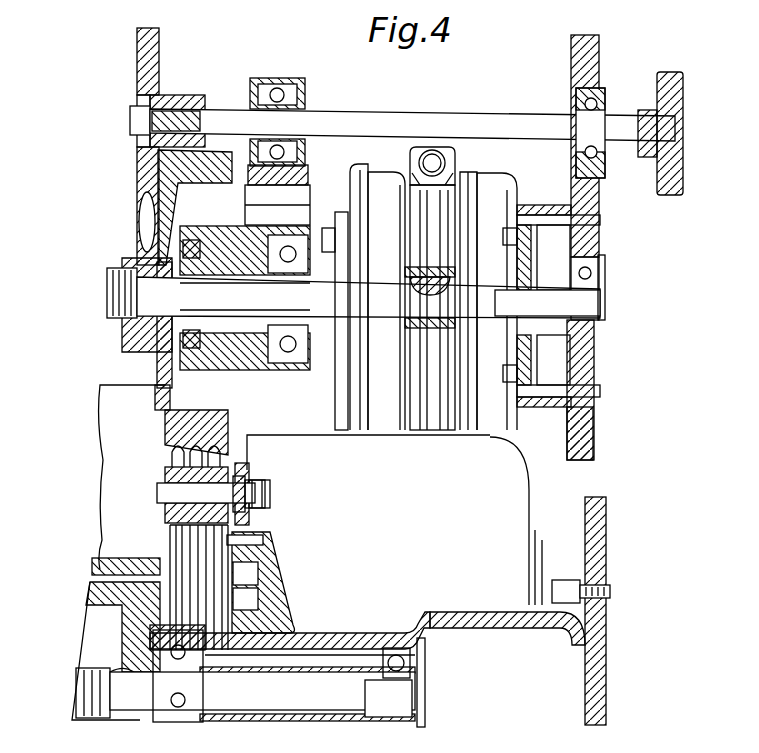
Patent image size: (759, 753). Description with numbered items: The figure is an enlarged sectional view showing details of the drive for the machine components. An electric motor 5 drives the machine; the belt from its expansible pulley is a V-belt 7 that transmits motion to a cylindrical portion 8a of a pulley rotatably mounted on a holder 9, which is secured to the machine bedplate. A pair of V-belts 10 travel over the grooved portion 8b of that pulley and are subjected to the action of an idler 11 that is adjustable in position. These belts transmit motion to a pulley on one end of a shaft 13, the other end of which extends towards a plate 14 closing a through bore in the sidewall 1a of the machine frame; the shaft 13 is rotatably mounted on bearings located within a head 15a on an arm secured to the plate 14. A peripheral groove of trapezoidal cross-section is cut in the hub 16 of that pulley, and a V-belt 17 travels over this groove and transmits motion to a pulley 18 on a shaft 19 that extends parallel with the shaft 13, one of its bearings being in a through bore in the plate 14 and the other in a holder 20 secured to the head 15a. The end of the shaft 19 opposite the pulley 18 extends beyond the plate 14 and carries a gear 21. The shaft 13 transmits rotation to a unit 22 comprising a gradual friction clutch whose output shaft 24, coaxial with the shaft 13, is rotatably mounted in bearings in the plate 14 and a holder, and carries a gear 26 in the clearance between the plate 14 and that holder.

The pulley 18 is at (160, 46).
The V-belt 17 is at (146, 224).
The shaft 19 is at (410, 106).
The holder 20 is at (300, 82).
The plate 14 is at (575, 60).
The gear 21 is at (660, 88).
The hub 16 is at (140, 335).
The shaft 13 is at (140, 296).
The head 15a is at (262, 362).
The unit 22 is at (414, 442).
The output shaft 24 is at (600, 306).
The gear 26 is at (592, 376).
The electric motor 5 is at (525, 489).
The sidewall 1a is at (600, 622).
The holder 9 is at (418, 620).
The V-belt 7 is at (118, 402).
The idler 11 is at (168, 478).
The V-belts 10 is at (176, 546).
The cylindrical portion 8a is at (116, 651).
The grooved portion 8b is at (236, 720).